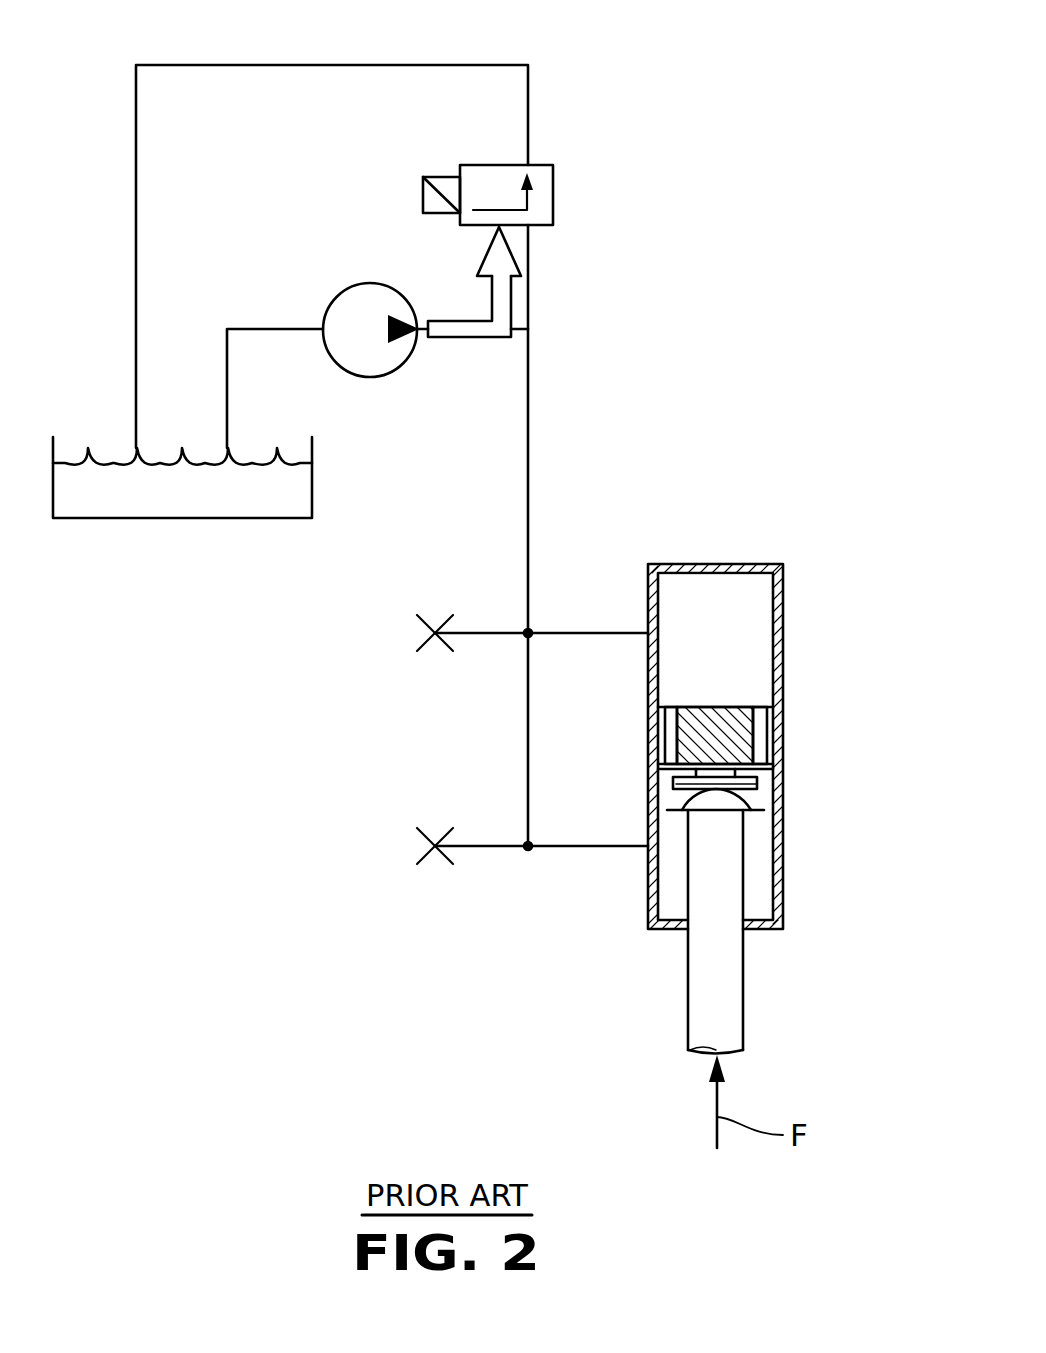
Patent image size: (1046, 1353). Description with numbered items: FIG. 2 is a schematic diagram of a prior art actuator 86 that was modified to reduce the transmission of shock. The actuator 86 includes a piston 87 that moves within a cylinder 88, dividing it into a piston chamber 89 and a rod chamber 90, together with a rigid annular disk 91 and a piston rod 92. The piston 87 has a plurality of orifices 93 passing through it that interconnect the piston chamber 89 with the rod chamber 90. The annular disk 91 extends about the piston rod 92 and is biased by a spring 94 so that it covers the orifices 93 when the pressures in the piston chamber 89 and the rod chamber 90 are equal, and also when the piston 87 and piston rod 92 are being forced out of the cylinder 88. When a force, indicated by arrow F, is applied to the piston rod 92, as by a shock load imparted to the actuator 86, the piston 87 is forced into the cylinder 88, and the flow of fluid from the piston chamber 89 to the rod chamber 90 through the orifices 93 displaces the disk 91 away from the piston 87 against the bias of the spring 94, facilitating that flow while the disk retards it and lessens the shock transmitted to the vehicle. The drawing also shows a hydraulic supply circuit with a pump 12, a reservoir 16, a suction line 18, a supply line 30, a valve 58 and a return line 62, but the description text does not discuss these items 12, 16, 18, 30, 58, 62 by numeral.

The pump 12 is at (352, 285).
The reservoir / tank 16 is at (123, 503).
The suction line 18 is at (278, 329).
The supply line 30 is at (530, 377).
The solenoid relief valve 58 is at (543, 187).
The return line 62 is at (322, 65).
The actuator 86 is at (845, 695).
The piston 87 is at (740, 712).
The cylinder 88 is at (785, 595).
The piston chamber 89 is at (735, 587).
The rod chamber 90 is at (767, 874).
The annular disk 91 is at (757, 783).
The piston rod 92 is at (733, 978).
The orifices 93 is at (670, 723).
The spring 94 is at (683, 814).